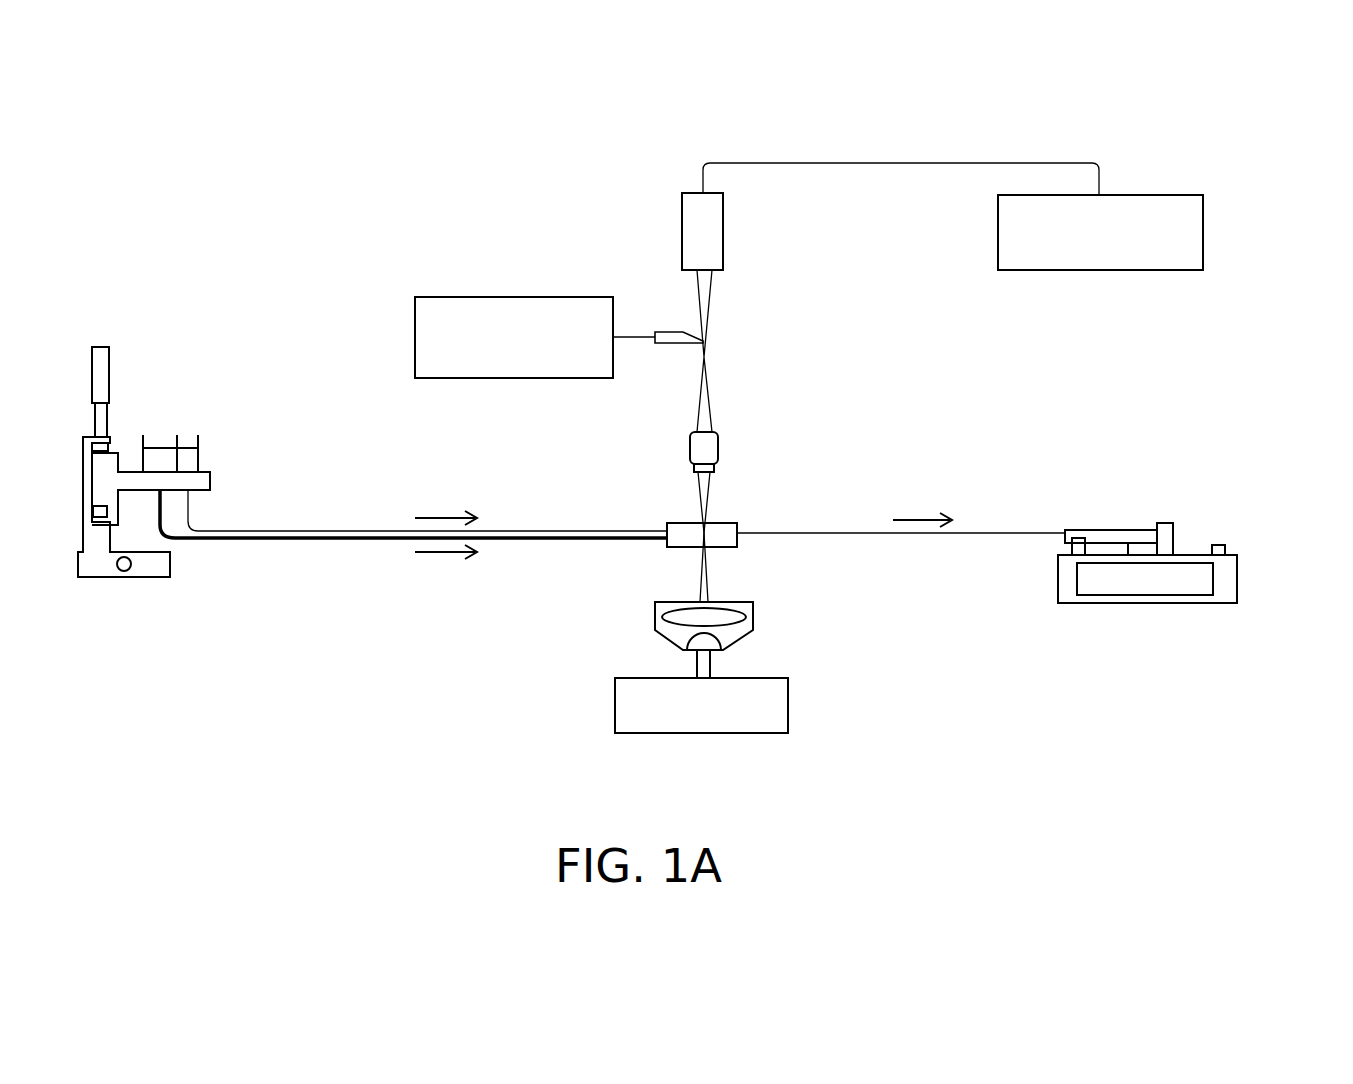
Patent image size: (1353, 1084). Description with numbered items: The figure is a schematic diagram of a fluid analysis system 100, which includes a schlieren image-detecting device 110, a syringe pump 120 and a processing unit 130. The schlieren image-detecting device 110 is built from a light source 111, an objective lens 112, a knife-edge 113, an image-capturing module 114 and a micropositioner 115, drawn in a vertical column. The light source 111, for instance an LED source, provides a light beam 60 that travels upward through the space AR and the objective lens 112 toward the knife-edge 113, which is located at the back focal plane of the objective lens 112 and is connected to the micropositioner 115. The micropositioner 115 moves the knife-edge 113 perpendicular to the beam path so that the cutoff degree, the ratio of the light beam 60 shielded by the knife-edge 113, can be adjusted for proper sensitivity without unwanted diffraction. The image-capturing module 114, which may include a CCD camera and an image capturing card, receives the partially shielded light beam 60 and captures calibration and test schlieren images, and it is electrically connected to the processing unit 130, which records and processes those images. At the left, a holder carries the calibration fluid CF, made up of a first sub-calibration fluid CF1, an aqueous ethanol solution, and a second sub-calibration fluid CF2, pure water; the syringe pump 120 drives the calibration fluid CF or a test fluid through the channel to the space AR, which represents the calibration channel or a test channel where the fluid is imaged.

The fluid analysis system 100 is at (1272, 766).
The schlieren image-detecting device 110 is at (135, 633).
The light source 111 is at (788, 708).
The objective lens 112 is at (713, 447).
The knife-edge 113 is at (665, 343).
The image-capturing module 114 is at (725, 228).
The micropositioner 115 is at (540, 297).
The syringe pump 120 is at (1230, 580).
The processing unit 130 is at (1139, 195).
The light beam 60 is at (711, 667).
The space AR is at (725, 523).
The calibration fluid CF is at (235, 353).
The first sub-calibration fluid CF1 is at (160, 450).
The second sub-calibration fluid CF2 is at (190, 450).